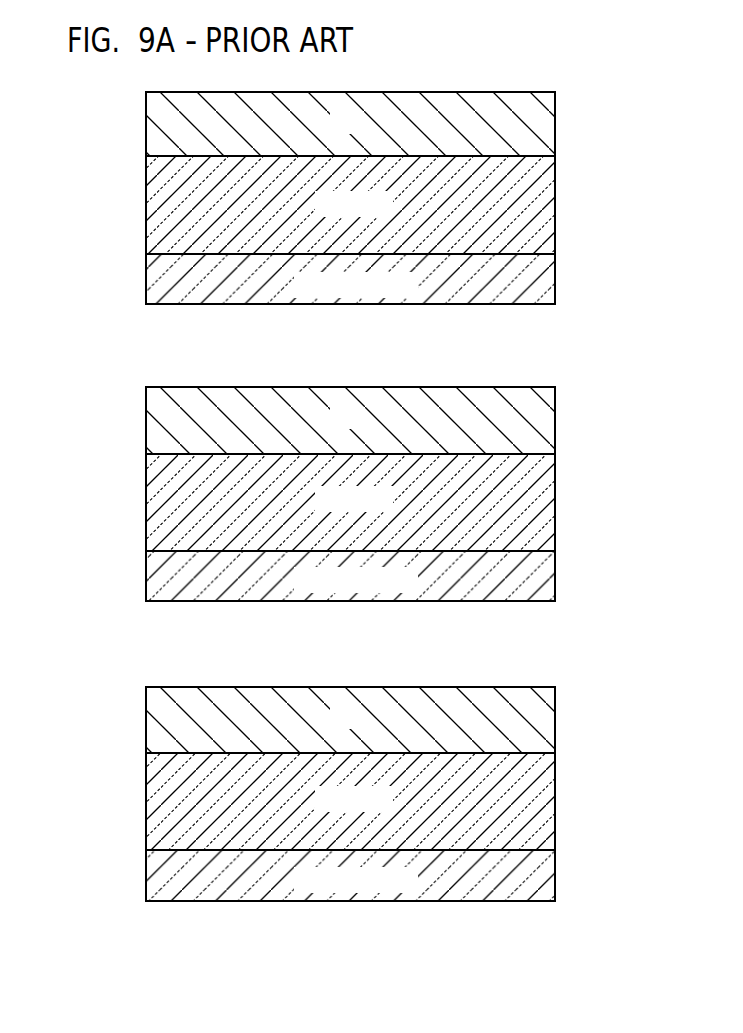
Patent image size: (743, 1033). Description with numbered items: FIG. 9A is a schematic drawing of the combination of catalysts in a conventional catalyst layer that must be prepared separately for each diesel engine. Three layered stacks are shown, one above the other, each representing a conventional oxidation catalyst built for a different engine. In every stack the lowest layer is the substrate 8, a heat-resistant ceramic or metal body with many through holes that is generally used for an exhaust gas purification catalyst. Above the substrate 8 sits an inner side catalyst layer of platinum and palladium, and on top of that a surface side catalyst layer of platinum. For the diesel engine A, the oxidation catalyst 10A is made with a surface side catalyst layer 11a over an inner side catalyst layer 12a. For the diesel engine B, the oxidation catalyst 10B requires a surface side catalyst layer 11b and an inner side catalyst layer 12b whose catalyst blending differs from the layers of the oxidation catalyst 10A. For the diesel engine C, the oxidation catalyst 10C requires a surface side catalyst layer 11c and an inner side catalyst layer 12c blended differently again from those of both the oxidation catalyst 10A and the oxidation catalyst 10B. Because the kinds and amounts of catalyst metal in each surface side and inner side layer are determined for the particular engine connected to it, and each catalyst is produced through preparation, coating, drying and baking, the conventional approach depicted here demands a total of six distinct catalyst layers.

The oxidation catalyst 10A is at (118, 125).
The oxidation catalyst 10B is at (118, 395).
The oxidation catalyst 10C is at (118, 692).
The surface side catalyst layer 11a is at (552, 128).
The surface side catalyst layer 11b is at (552, 424).
The surface side catalyst layer 11c is at (552, 724).
The inner side catalyst layer 12a is at (552, 193).
The inner side catalyst layer 12b is at (552, 488).
The inner side catalyst layer 12c is at (552, 788).
The substrate 8 is at (552, 283).